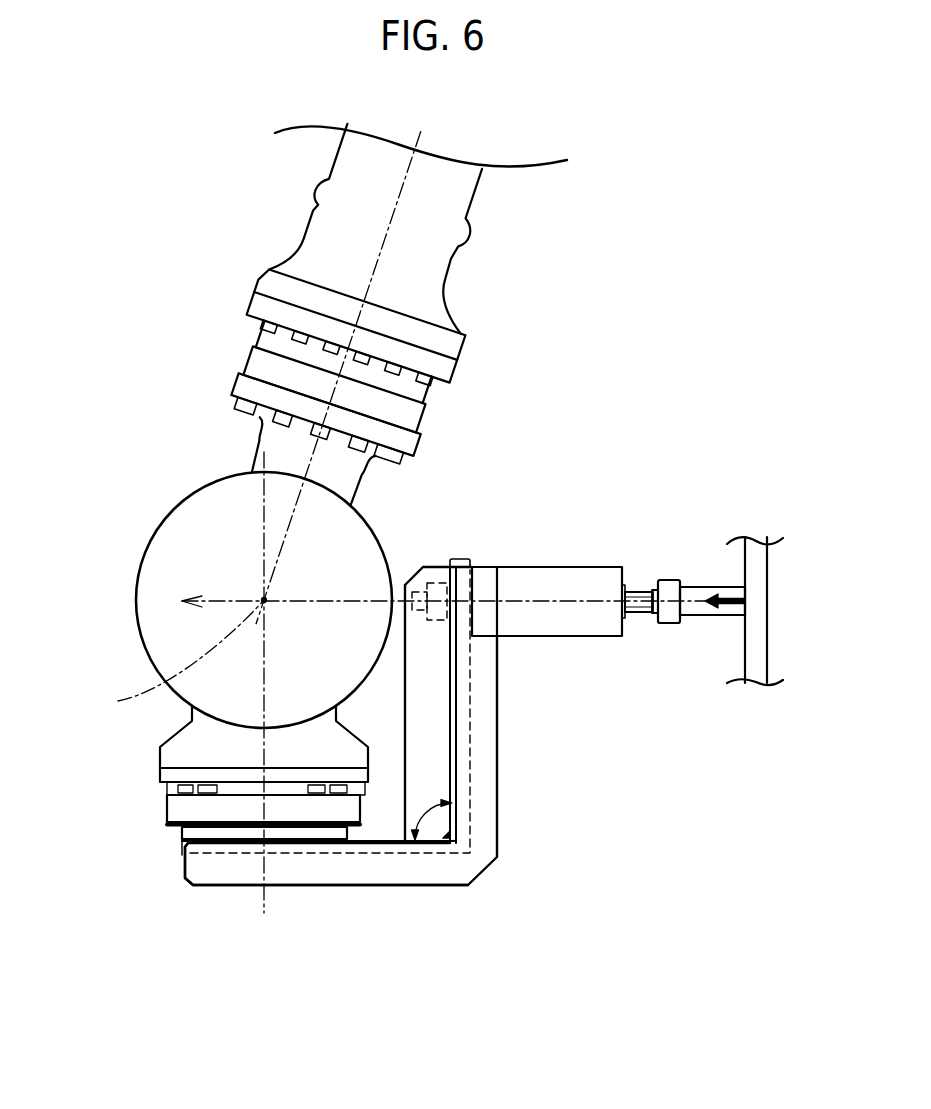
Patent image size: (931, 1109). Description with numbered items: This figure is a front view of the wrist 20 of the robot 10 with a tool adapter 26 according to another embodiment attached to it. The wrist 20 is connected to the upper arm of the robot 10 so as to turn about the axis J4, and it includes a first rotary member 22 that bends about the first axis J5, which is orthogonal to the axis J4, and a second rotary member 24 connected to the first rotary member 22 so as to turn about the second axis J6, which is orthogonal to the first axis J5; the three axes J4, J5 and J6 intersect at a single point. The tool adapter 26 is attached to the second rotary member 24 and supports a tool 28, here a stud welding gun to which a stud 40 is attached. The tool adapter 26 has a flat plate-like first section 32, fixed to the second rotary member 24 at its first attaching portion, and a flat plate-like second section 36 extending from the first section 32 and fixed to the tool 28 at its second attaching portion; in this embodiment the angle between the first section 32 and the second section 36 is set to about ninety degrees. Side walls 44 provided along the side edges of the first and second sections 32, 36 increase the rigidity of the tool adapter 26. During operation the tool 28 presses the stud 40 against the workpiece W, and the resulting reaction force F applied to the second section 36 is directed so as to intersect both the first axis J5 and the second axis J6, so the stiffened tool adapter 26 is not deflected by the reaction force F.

The robot 10 is at (257, 228).
The wrist 20 is at (173, 437).
The first rotary member 22 is at (157, 528).
The second rotary member 24 is at (178, 810).
The tool adapter 26 is at (500, 810).
The tool 28 is at (553, 567).
The first section 32 is at (182, 843).
The second section 36 is at (463, 559).
The stud 40 is at (707, 585).
The side walls 44 is at (402, 867).
The axis line J4 is at (377, 257).
The first axis line J5 is at (173, 657).
The second axis line J6 is at (263, 900).
The reaction force F is at (724, 622).
The workpiece W is at (767, 623).